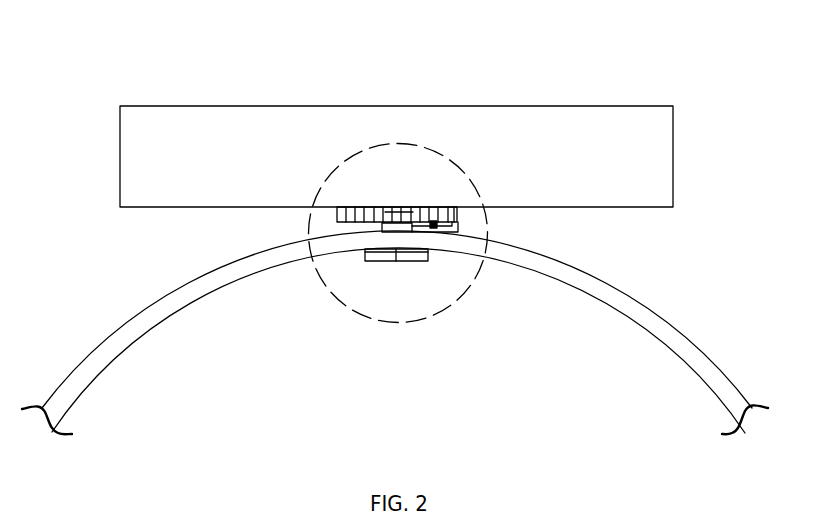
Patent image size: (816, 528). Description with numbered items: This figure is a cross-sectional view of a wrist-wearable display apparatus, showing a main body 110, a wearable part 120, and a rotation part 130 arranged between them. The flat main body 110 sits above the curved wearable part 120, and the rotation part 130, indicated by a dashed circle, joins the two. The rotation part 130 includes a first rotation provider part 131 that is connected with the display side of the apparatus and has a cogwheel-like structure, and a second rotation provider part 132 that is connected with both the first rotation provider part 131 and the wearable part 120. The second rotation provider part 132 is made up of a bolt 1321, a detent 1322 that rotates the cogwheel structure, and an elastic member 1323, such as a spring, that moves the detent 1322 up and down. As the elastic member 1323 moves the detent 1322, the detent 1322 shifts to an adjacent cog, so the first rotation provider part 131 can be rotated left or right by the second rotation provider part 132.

The main body 110 is at (588, 98).
The wearable part 120 is at (697, 341).
The rotation part 130 is at (381, 322).
The first rotation provider part 131 is at (337, 213).
The second rotation provider part 132 is at (436, 200).
The bolt 1321 is at (381, 262).
The detent 1322 is at (459, 230).
The elastic member 1323 is at (453, 221).